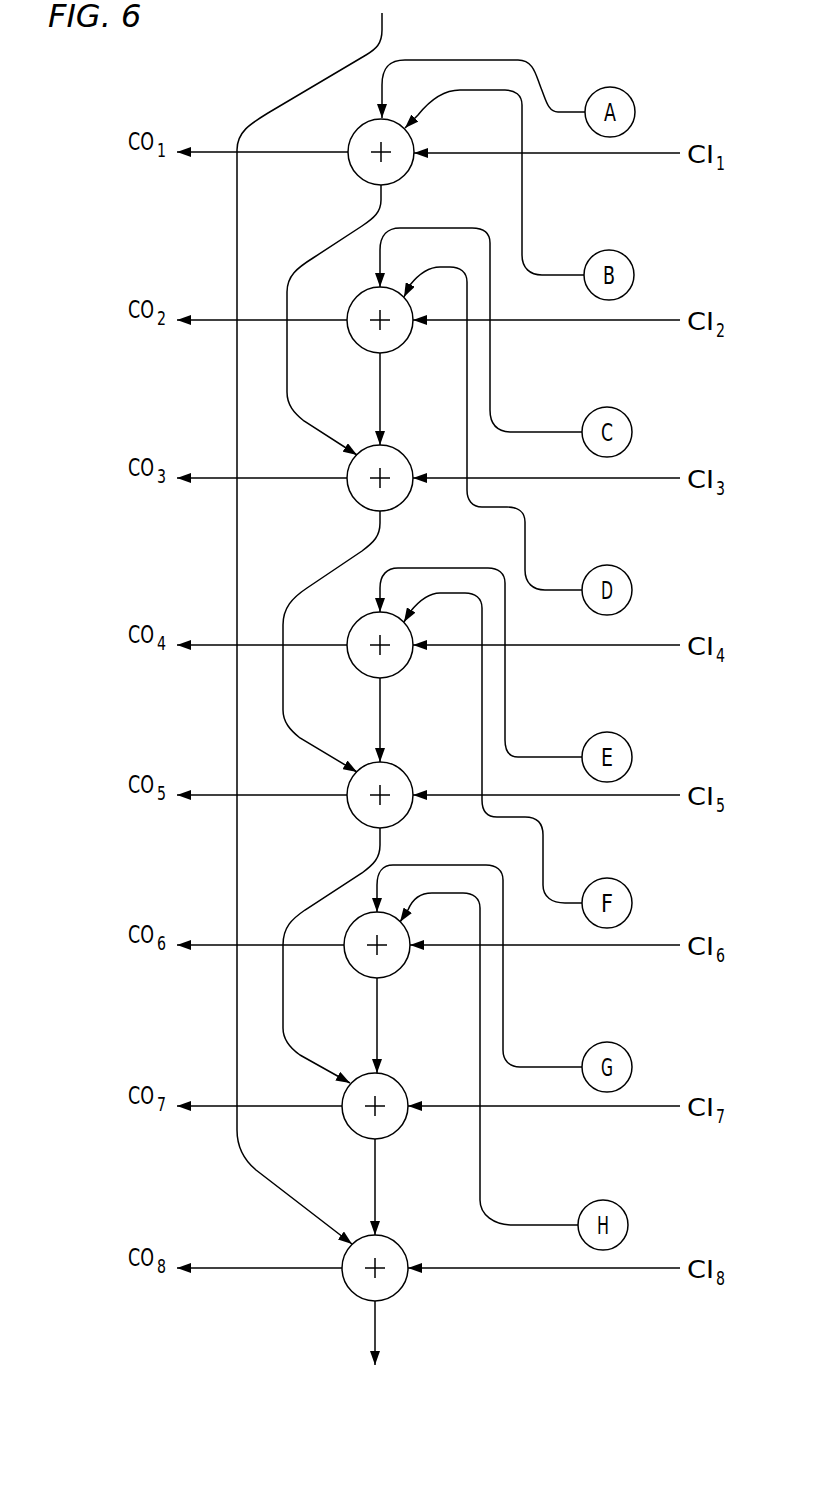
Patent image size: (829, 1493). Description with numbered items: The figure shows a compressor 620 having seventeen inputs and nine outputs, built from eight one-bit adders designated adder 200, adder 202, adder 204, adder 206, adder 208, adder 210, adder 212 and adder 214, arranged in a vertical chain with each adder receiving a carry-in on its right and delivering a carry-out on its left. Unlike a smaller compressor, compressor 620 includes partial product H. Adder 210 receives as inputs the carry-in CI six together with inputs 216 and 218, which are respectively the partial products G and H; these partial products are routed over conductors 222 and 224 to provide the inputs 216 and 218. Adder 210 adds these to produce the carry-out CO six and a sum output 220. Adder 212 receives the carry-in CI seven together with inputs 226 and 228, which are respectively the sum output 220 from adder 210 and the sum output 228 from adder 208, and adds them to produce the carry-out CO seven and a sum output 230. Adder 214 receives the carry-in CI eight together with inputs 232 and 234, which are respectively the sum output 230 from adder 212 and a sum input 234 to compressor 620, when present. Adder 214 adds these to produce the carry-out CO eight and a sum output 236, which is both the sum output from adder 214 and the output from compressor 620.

The adder 200 is at (356, 174).
The adder 202 is at (357, 345).
The adder 204 is at (356, 501).
The adder 206 is at (358, 669).
The adder 208 is at (356, 818).
The adder 210 is at (354, 969).
The adder 212 is at (352, 1130).
The adder 214 is at (352, 1292).
The input 216 is at (450, 865).
The input 218 is at (478, 972).
The sum output 220 is at (379, 1006).
The conductor 222 is at (505, 1013).
The conductor 224 is at (484, 1157).
The input 226 is at (379, 1038).
The sum output 228 is at (300, 1055).
The sum output 230 is at (377, 1160).
The input 232 is at (377, 1195).
The sum input 234 is at (280, 97).
The sum output 236 is at (377, 1325).
The compressor 620 is at (579, 1338).